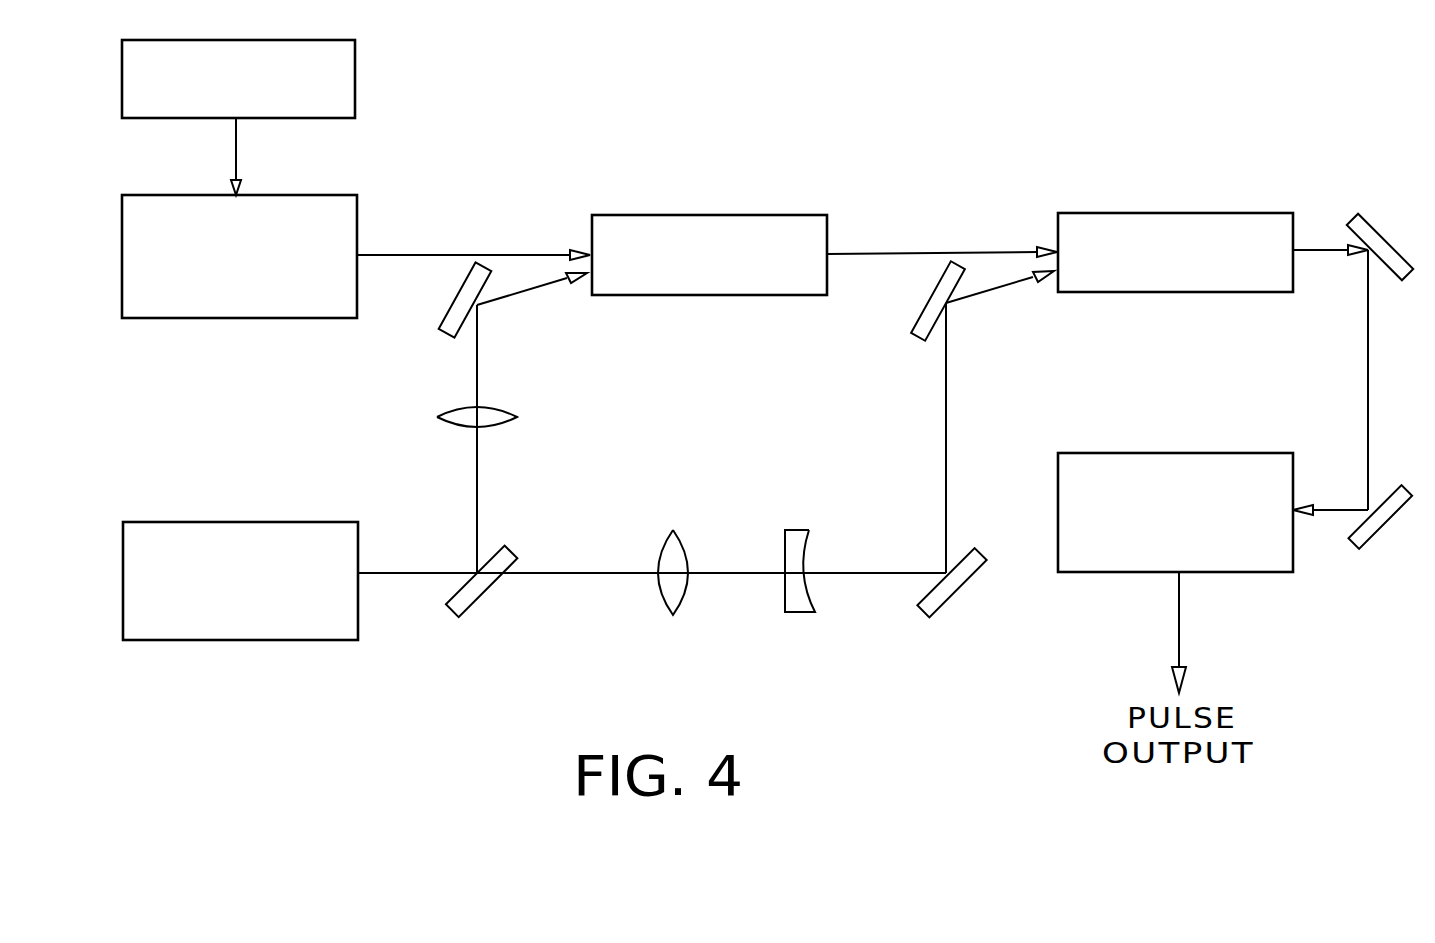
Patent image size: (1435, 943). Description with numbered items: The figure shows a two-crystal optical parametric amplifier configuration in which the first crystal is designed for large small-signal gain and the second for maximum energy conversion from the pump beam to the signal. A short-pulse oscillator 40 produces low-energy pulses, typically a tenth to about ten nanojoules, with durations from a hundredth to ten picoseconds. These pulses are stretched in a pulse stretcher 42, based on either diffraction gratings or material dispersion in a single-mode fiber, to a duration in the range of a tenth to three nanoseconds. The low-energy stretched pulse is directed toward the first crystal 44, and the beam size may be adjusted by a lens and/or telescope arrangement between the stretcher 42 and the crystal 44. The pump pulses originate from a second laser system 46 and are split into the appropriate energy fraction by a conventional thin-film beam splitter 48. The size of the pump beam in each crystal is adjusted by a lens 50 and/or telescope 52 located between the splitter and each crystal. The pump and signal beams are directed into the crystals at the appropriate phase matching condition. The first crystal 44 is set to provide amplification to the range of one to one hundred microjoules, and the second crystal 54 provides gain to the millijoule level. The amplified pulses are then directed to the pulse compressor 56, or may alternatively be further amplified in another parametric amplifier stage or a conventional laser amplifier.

The short-pulse oscillator 40 is at (355, 83).
The pulse stretcher 42 is at (357, 215).
The first crystal 44 is at (708, 215).
The second laser system 46 is at (267, 520).
The thin-film beam splitter 48 is at (505, 545).
The lens 50 is at (675, 532).
The telescope 52 is at (838, 620).
The second crystal 54 is at (1145, 212).
The pulse compressor 56 is at (1183, 453).